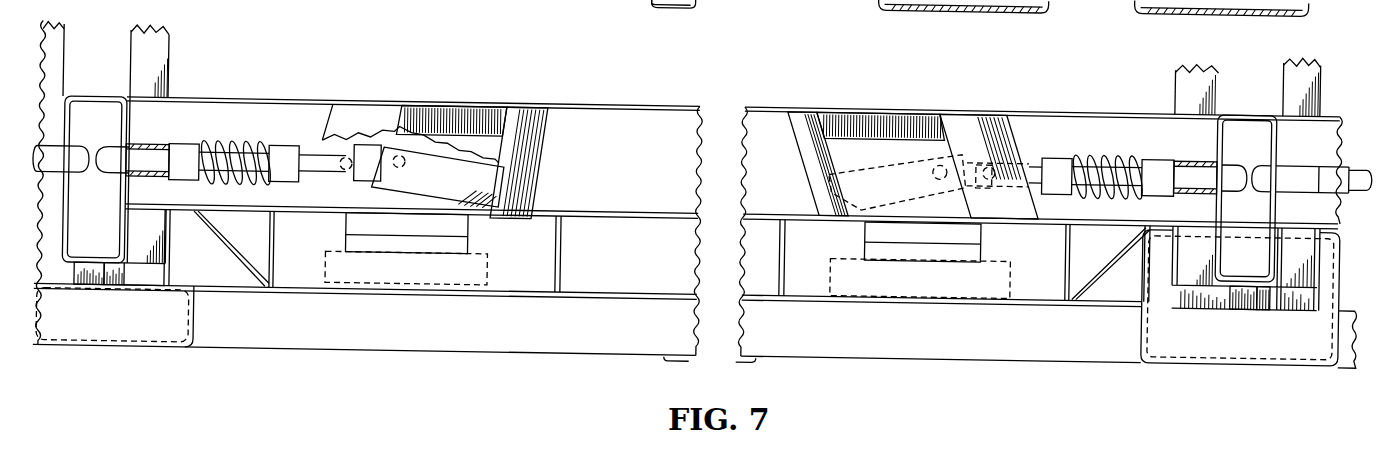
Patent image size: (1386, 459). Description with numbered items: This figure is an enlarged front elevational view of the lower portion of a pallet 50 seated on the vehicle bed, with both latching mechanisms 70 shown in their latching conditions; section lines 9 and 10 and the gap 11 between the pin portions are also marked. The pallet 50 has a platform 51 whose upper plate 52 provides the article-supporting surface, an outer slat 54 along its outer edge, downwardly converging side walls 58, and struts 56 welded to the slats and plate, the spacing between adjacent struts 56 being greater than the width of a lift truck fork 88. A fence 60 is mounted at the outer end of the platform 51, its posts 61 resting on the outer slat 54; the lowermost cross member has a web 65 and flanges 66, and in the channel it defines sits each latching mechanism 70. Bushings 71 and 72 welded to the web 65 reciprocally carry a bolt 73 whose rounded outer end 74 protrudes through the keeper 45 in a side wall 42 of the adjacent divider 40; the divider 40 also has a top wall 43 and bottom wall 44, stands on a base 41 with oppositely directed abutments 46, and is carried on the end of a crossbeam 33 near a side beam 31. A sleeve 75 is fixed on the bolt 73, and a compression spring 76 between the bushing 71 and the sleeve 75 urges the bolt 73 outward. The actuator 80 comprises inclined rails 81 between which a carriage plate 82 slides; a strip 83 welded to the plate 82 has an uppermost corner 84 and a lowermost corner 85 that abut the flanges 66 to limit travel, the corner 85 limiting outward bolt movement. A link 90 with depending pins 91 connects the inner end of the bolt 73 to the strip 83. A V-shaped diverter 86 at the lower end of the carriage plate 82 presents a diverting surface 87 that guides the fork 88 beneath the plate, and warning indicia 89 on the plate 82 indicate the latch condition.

The section line 9 is at (443, 14).
The section line 10 is at (150, 0).
The gap between pin sections 11 is at (93, 149).
The side beam 31 is at (1116, 336).
The crossbeam 33 is at (203, 271).
The divider 40 is at (1238, 84).
The base 41 is at (91, 290).
The side wall 42 is at (113, 110).
The top wall 43 is at (83, 81).
The bottom wall 44 is at (90, 257).
The keeper 45 is at (73, 177).
The abutment 46 is at (145, 278).
The pallet 50 is at (734, 79).
The platform 51 is at (728, 293).
The upper plate 52 is at (747, 217).
The outer slat 54 is at (762, 285).
The strut 56 is at (277, 266).
The side wall 58 is at (250, 270).
The fence 60 is at (631, 93).
The post 61 is at (58, 40).
The web 65 is at (670, 124).
The flange 66 is at (584, 203).
The latching mechanism 70 is at (233, 121).
The bushing 71 is at (285, 143).
The bushing 72 is at (148, 143).
The bolt 73 is at (317, 174).
The outer end 74 is at (1258, 175).
The sleeve 75 is at (182, 143).
The spring 76 is at (240, 142).
The actuator 80 is at (486, 88).
The rail 81 is at (355, 113).
The carriage plate 82 is at (423, 208).
The strip 83 is at (466, 195).
The uppermost corner 84 is at (385, 146).
The lowermost corner 85 is at (497, 206).
The diverter 86 is at (381, 233).
The lower surface 87 is at (420, 243).
The fork 88 is at (353, 256).
The warning indicia 89 is at (447, 105).
The link 90 is at (371, 146).
The pin 91 is at (413, 159).